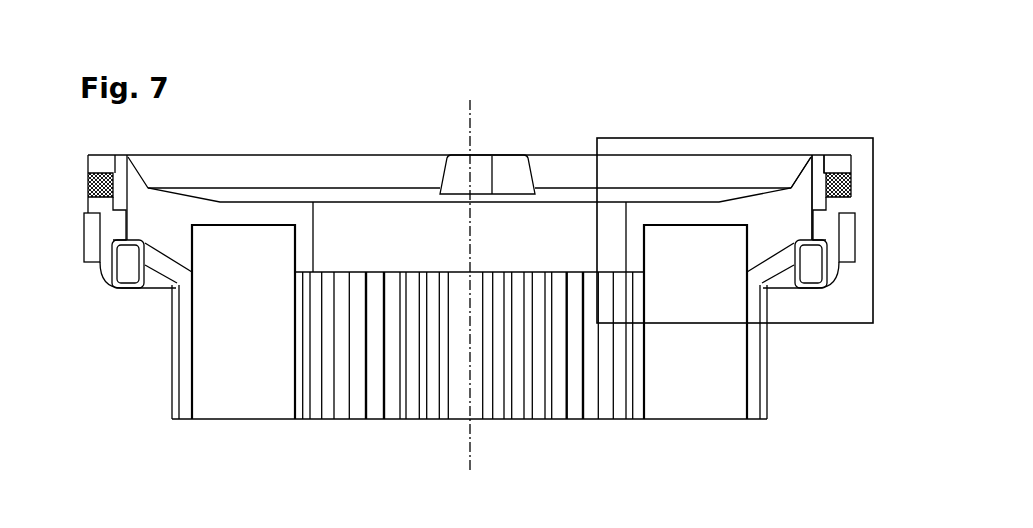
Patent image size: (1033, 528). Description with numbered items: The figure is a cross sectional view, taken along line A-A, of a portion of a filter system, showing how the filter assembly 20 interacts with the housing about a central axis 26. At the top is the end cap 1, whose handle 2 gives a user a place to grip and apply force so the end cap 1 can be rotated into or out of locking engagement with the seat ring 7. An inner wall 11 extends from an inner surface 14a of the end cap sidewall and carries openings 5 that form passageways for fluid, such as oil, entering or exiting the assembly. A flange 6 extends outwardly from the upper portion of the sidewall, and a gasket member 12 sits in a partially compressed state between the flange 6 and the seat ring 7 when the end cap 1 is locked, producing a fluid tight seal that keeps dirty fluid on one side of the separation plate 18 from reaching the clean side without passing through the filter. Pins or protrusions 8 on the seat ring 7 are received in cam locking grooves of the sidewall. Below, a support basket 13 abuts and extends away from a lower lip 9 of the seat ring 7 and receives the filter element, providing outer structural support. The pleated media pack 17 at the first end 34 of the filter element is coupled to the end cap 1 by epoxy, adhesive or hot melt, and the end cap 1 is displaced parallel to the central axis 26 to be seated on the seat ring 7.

The end cap 1 is at (265, 167).
The handle 2 is at (508, 173).
The opening 5 is at (368, 225).
The flange 6 is at (827, 165).
The seat ring 7 is at (840, 205).
The pin or protrusion 8 is at (819, 227).
The lower lip 9 is at (102, 270).
The inner wall 11 is at (302, 202).
The gasket member 12 is at (851, 183).
The support basket 13 is at (147, 290).
The inner surface 14a is at (802, 177).
The pleated media pack 17 is at (248, 393).
The separation plate 18 is at (84, 213).
The filter assembly 20 is at (658, 70).
The central axis 26 is at (472, 106).
The first end 34 is at (228, 253).
The line A- A is at (800, 325).